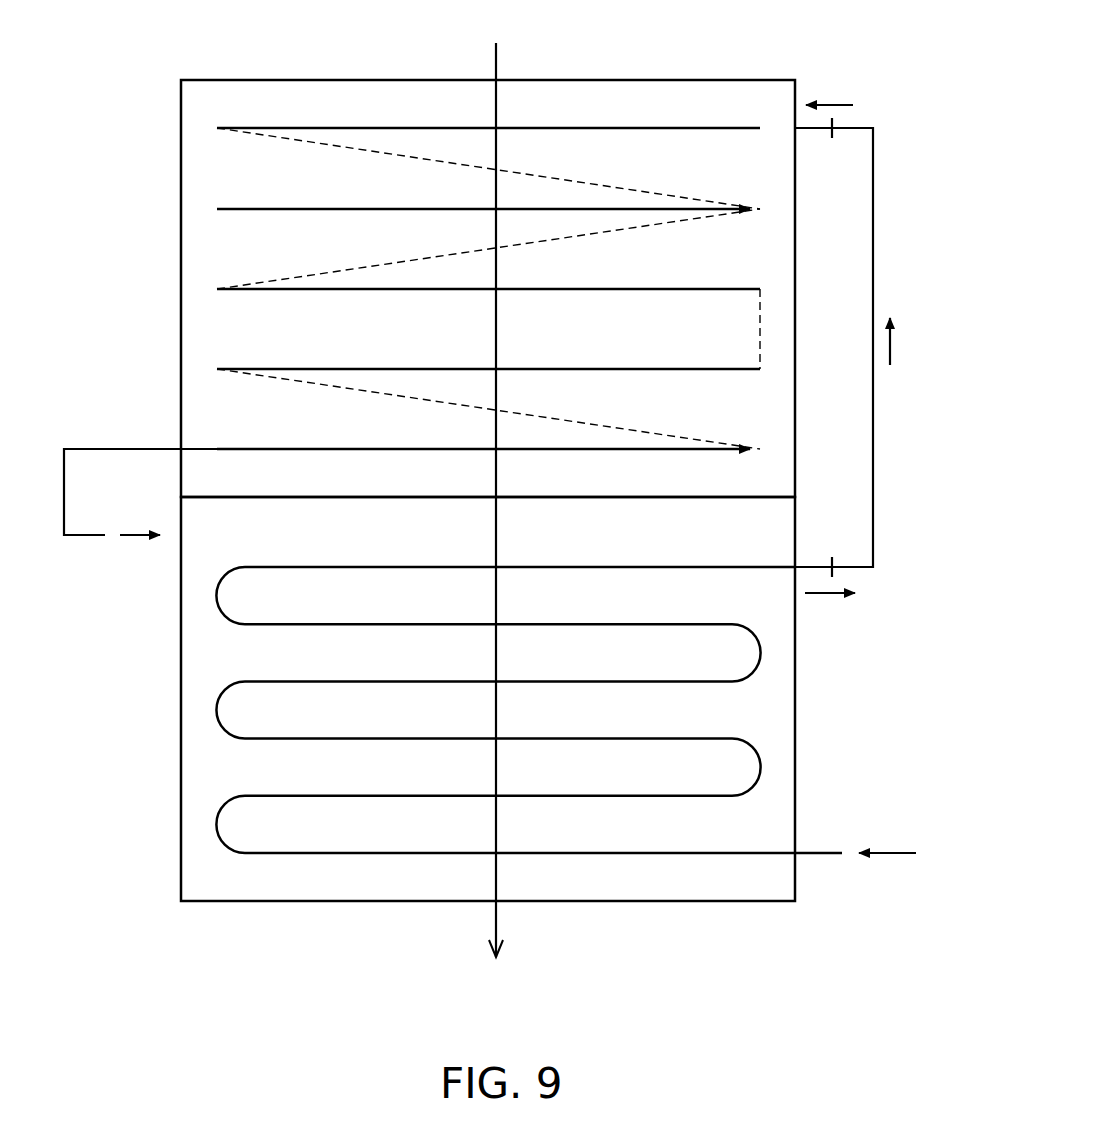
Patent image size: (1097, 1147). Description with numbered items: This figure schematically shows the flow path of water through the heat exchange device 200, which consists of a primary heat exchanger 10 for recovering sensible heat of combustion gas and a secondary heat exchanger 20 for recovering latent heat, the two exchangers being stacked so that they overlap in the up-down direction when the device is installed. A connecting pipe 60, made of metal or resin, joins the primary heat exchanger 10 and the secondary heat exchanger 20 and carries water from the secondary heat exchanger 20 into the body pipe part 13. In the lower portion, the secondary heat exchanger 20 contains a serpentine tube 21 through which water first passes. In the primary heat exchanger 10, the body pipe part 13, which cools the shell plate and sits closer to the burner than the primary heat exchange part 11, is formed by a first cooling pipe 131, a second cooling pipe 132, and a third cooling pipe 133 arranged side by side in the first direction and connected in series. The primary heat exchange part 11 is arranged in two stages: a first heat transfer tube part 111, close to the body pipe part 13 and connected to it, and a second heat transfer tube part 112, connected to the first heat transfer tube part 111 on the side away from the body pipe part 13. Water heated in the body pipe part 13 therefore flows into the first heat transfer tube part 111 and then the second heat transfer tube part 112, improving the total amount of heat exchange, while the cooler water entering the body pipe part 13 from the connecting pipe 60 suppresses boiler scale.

The heat exchange device 200 is at (874, 79).
The primary heat exchanger 10 is at (796, 95).
The body pipe part 13 is at (110, 88).
The first cooling pipe 131 is at (254, 127).
The second cooling pipe 132 is at (254, 208).
The third cooling pipe 133 is at (254, 288).
The primary heat exchange part 11 is at (110, 330).
The first heat transfer tube part 111 is at (254, 368).
The second heat transfer tube part 112 is at (254, 448).
The connecting pipe 60 is at (873, 404).
The secondary heat exchanger 20 is at (795, 657).
The heat exchanger coil 21 is at (217, 712).